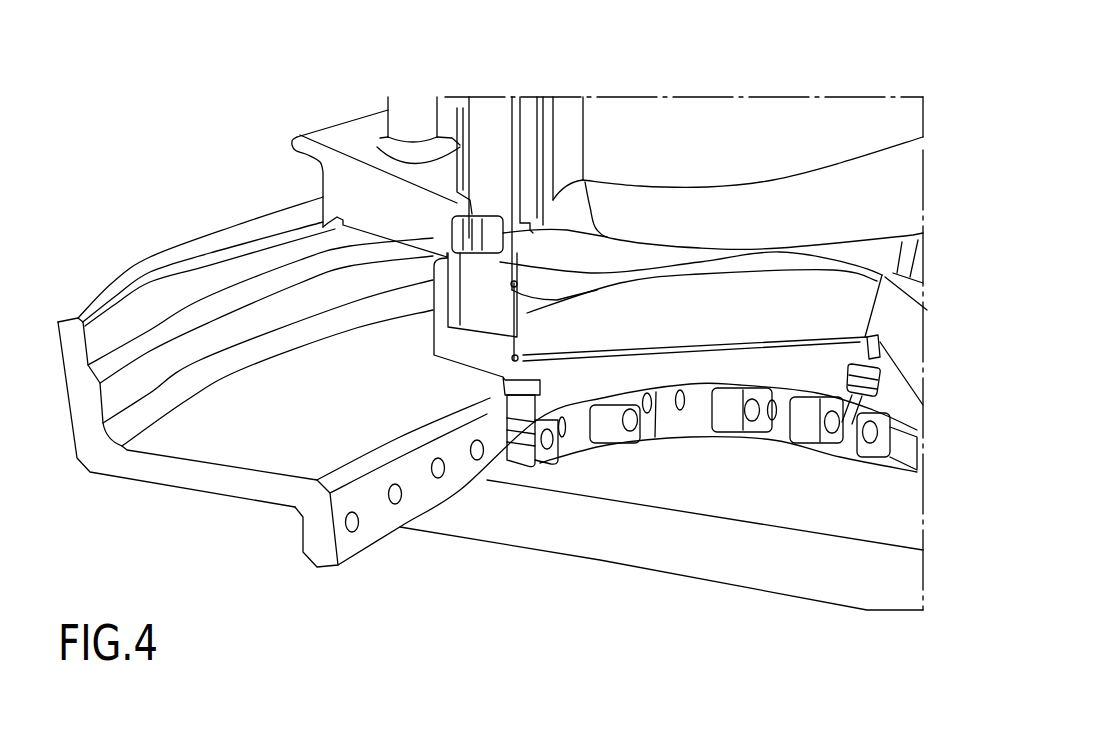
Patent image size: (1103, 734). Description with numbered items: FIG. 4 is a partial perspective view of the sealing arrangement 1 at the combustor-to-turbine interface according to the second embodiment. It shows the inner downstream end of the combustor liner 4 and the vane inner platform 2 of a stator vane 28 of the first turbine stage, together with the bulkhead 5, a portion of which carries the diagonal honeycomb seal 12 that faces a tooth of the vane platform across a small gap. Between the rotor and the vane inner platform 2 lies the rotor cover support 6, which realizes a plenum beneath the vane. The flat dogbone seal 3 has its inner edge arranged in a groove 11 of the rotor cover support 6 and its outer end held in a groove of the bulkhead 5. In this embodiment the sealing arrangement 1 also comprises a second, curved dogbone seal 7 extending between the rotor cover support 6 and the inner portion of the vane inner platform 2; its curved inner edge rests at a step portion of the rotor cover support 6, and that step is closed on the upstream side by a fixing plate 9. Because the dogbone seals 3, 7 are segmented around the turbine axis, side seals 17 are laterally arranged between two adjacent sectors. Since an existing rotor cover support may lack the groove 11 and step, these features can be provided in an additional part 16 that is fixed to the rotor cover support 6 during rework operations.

The sealing arrangement 1 is at (636, 147).
The vane inner platform 2 is at (300, 135).
The flat dogbone seal 3 is at (708, 327).
The combustor liner 4 is at (497, 113).
The bulkhead 5 is at (550, 295).
The rotor cover support 6 is at (305, 411).
The second dogbone seal 7 is at (412, 240).
The fixing plate 9 is at (432, 290).
The groove 11 is at (537, 365).
The diagonal honeycomb seal 12 is at (461, 170).
The additional part 16 is at (727, 362).
The side seals 17 is at (435, 315).
The stator vane 28 is at (388, 111).